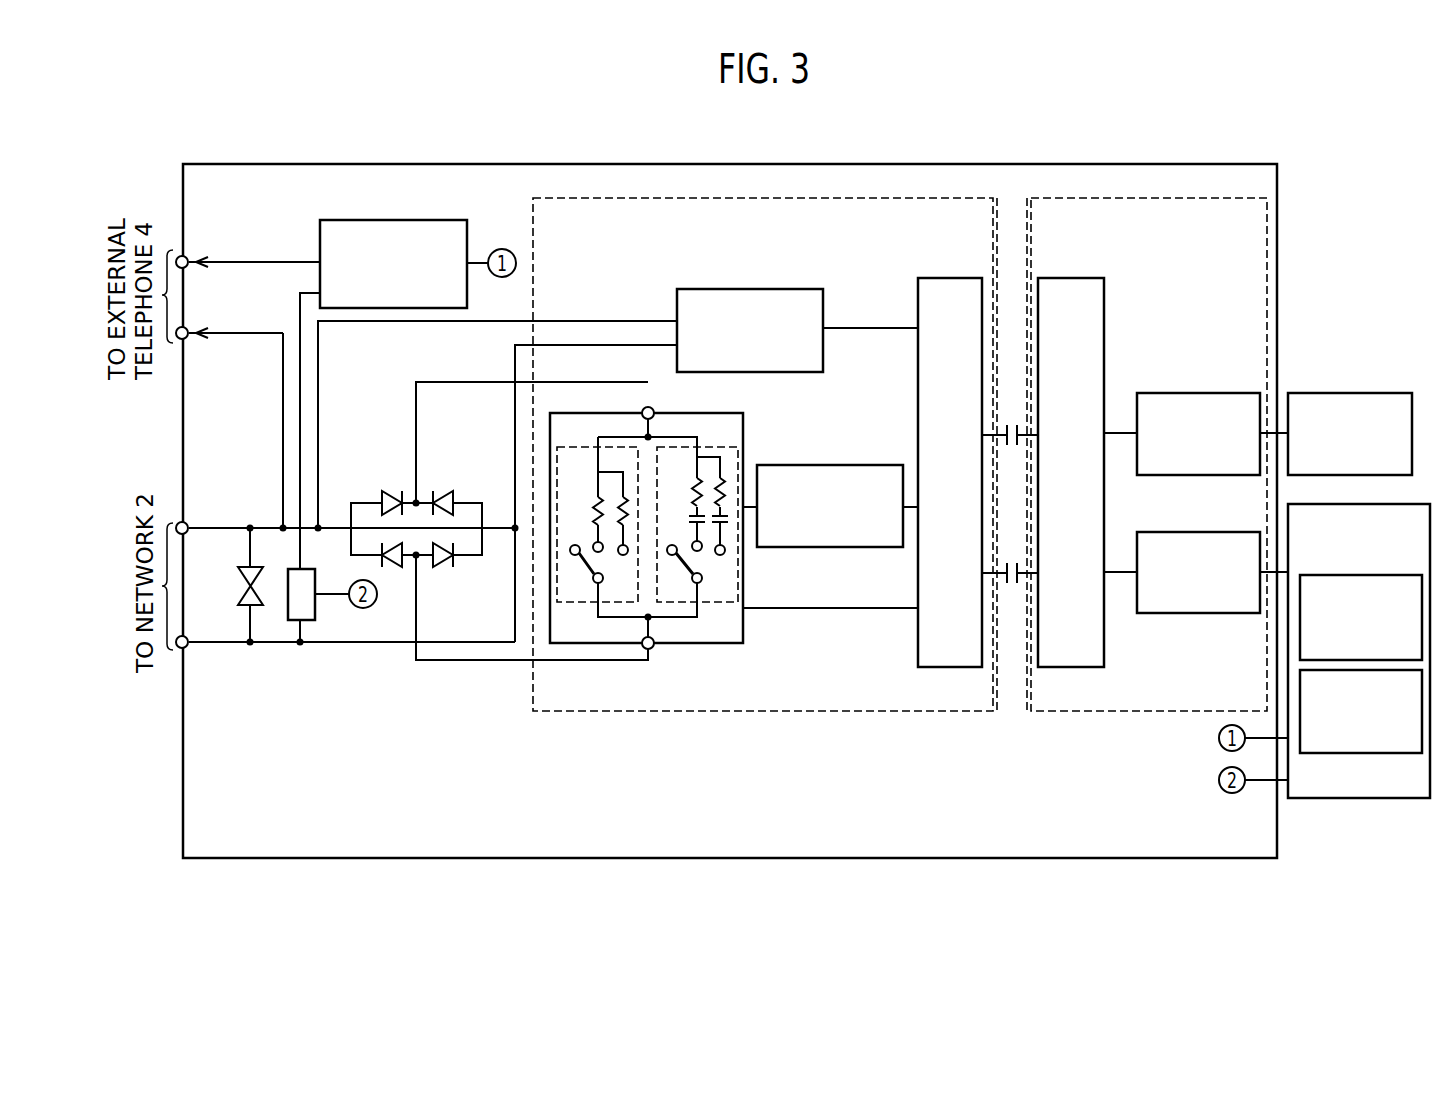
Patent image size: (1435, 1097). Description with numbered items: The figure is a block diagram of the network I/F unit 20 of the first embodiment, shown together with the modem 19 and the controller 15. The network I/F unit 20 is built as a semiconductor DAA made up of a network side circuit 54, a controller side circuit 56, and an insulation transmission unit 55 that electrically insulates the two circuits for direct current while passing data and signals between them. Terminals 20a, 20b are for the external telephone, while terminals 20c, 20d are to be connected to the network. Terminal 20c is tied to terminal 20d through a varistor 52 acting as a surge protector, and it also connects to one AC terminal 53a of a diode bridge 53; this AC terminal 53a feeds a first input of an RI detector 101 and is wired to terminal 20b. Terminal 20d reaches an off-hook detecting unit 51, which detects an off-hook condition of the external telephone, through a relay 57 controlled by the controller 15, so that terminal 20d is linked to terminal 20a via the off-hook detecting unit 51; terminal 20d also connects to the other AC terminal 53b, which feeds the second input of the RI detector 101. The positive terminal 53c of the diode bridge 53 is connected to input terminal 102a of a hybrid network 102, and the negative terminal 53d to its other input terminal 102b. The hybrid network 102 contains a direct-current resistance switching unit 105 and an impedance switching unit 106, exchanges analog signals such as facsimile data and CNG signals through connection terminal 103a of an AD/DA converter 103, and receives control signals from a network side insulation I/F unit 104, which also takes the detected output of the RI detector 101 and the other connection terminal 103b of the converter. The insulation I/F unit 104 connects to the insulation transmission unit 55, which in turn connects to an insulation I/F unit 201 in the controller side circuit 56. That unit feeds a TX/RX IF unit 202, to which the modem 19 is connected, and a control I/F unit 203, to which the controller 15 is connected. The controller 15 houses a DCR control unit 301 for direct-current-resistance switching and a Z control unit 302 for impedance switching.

The network I/F unit 20 is at (1140, 164).
The terminal 20a is at (188, 257).
The terminal 20b is at (189, 339).
The terminal 20c is at (188, 522).
The terminal 20d is at (180, 650).
The off-hook detecting unit 51 is at (404, 220).
The varistor 52 is at (238, 610).
The diode bridge 53 is at (415, 566).
The AC terminal 53a is at (352, 525).
The AC terminal 53b is at (482, 523).
The positive terminal 53c is at (410, 500).
The negative terminal 53d is at (420, 558).
The network side circuit 54 is at (955, 198).
The insulation transmission unit 55 is at (1015, 198).
The controller side circuit 56 is at (1230, 198).
The relay 57 is at (315, 623).
The RI detector 101 is at (780, 289).
The hybrid network 102 is at (673, 571).
The input terminal 102a is at (660, 412).
The input terminal 102b is at (653, 649).
The AD/DA converter 103 is at (855, 464).
The connection terminal 103a is at (752, 505).
The connection terminal 103b is at (905, 518).
The network side insulation I/F unit 104 is at (928, 278).
The direct-current resistance switching unit 105 is at (577, 604).
The impedance switching unit 106 is at (745, 582).
The insulation I/F unit 201 is at (1105, 307).
The TX/RX IF unit 202 is at (1215, 393).
The control I/F unit 203 is at (1214, 532).
The DCR control unit 301 is at (1300, 637).
The Z control unit 302 is at (1300, 683).
The controller 15 is at (1313, 681).
The modem 19 is at (1368, 393).